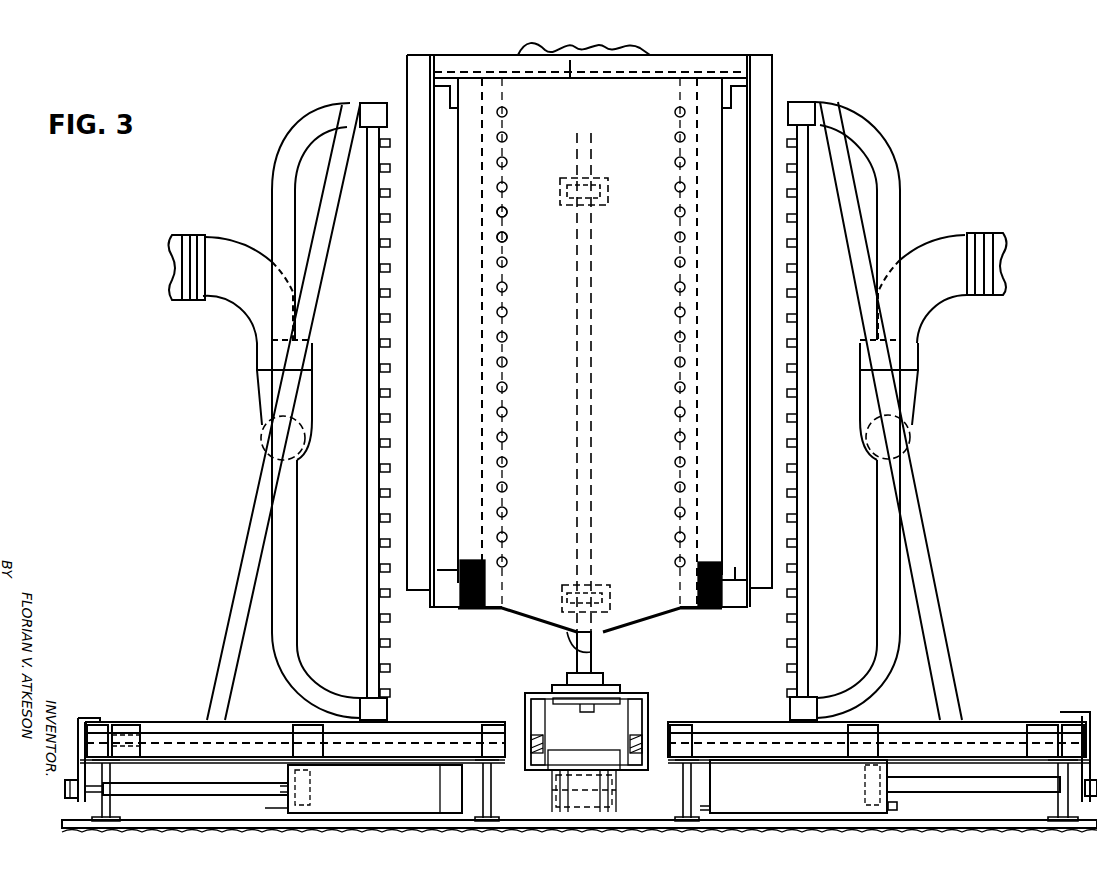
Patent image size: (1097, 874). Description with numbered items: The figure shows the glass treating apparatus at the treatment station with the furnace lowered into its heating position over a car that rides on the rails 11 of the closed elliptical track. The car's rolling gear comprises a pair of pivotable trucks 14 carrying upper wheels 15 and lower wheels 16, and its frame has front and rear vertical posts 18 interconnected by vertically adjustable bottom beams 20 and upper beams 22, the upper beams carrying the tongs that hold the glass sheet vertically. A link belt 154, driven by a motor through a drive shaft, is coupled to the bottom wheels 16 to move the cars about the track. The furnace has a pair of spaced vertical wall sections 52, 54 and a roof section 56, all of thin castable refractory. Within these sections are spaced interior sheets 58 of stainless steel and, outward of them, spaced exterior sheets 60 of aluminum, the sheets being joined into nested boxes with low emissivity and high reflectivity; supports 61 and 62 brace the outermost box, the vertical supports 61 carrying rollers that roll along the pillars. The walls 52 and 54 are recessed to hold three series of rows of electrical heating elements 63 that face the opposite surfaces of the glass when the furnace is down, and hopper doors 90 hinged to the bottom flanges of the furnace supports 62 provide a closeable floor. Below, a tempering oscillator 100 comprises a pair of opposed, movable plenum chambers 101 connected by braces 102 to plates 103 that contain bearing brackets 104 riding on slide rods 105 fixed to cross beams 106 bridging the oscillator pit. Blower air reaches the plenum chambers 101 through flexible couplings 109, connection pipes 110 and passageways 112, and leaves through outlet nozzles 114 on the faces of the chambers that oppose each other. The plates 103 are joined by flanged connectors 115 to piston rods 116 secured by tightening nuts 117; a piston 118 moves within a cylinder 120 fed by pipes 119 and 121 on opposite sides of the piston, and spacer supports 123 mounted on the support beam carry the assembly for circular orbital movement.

The rails 11 is at (628, 744).
The pivotable trucks 14 is at (541, 693).
The upper wheels 15 is at (556, 729).
The lower wheels 16 is at (630, 766).
The vertical posts 18 is at (577, 410).
The bottom beams 20 is at (610, 599).
The upper beams 22 is at (601, 204).
The vertical wall section 52 is at (506, 100).
The vertical wall section 54 is at (676, 98).
The roof section 56 is at (570, 84).
The interior sheets 58 is at (491, 575).
The exterior sheets 60 is at (466, 560).
The vertical supports 61 is at (407, 89).
The furnace supports 62 is at (434, 87).
The electrical heating elements 63 is at (507, 235).
The hopper doors 90 is at (594, 633).
The tempering oscillator 100 is at (898, 139).
The plenum chambers 101 is at (367, 448).
The braces 102 is at (250, 561).
The plates 103 is at (148, 722).
The bearing brackets 104 is at (118, 732).
The slide rods 105 is at (472, 722).
The cross beams 106 is at (488, 786).
The flexible couplings 109 is at (1004, 247).
The connection pipes 110 is at (227, 297).
The passageways 112 is at (262, 448).
The outlet nozzles 114 is at (383, 397).
The flanged connectors 115 is at (77, 742).
The piston rods 116 is at (157, 790).
The tightening nuts 117 is at (65, 797).
The piston 118 is at (306, 786).
The pipe 119 is at (897, 806).
The cylinder 120 is at (434, 789).
The pipe 121 is at (698, 806).
The spacer supports 123 is at (104, 776).
The link belt 154 is at (567, 797).